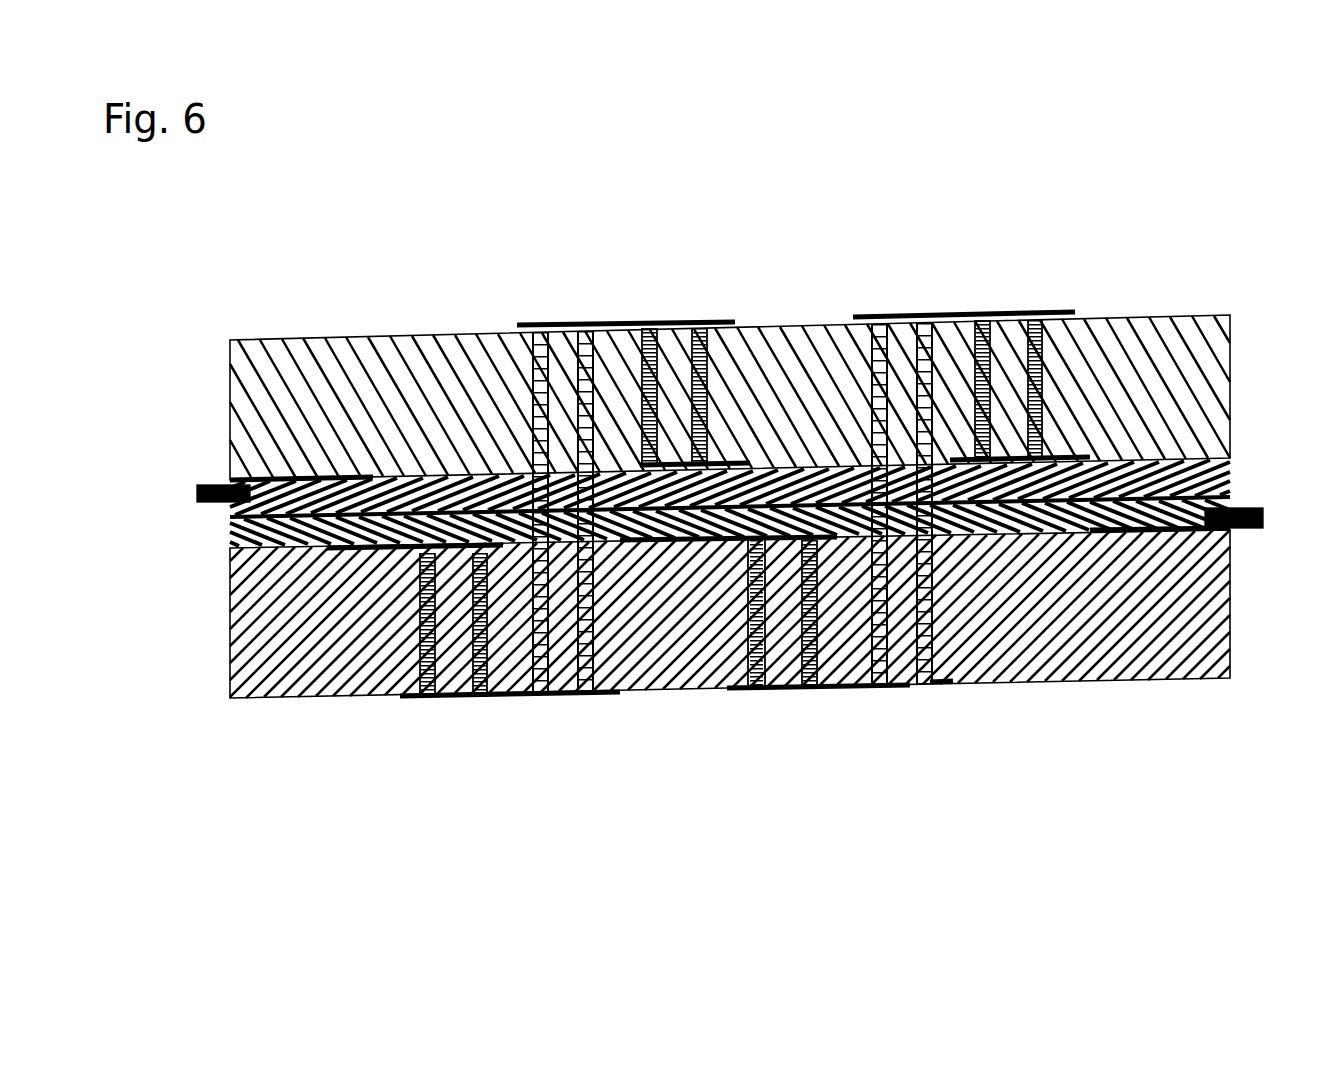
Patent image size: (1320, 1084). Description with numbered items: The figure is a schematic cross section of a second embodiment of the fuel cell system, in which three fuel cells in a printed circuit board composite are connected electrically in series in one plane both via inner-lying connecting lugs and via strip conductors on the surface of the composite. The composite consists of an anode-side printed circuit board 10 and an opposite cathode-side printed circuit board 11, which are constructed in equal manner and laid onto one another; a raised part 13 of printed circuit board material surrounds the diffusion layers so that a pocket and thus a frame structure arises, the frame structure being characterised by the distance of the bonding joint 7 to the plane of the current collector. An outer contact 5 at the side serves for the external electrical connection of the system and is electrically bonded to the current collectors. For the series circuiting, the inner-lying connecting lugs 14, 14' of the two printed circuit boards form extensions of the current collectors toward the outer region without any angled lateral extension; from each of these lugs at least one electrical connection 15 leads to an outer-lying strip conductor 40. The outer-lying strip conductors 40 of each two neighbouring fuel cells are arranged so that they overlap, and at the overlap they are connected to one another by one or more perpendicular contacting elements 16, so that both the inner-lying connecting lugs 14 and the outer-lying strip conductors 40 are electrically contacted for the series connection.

The outer contact 5 is at (1247, 525).
The bonding joint 7 is at (255, 520).
The anode-side printed circuit board 10 is at (330, 412).
The cathode-side printed circuit board 11 is at (300, 638).
The raised part of printed circuit board material 13 is at (1145, 515).
The inner-lying connecting lug 14 is at (730, 583).
The inner-lying connecting lug 14' is at (781, 295).
The electrical connection 15 is at (650, 385).
The perpendicular contacting element 16 is at (540, 548).
The outer-lying strip conductor 40 is at (615, 318).